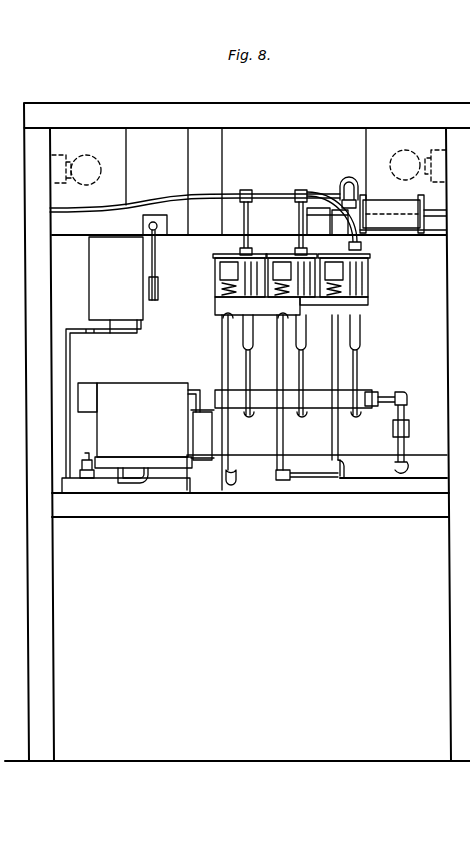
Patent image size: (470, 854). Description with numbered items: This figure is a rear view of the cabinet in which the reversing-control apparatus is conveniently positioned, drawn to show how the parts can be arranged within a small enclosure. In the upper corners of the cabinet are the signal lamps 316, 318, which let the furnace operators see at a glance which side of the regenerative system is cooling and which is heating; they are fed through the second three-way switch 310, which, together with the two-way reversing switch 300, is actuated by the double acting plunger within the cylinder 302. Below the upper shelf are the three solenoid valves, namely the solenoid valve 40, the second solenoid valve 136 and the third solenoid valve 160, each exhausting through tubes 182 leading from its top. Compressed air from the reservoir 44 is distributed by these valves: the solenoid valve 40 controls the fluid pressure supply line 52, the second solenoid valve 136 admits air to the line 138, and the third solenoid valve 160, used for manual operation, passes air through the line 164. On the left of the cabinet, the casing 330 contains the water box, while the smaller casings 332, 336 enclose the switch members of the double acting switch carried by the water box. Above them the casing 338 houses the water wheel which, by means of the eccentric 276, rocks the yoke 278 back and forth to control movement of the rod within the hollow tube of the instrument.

The signal lamp 318 is at (410, 140).
The signal lamp 316 is at (120, 148).
The second three-way switch 310 is at (304, 194).
The two-way reversing switch 300 is at (340, 214).
The exhaust tubes 182 is at (244, 232).
The cylinder 302 is at (392, 236).
The third solenoid valve 160 is at (372, 270).
The casing 338 is at (126, 365).
The yoke 278 is at (171, 235).
The eccentric 276 is at (160, 290).
The solenoid valve 40 is at (214, 305).
The second solenoid valve 136 is at (362, 306).
The air line 138 is at (288, 445).
The compressed air reservoir 44 is at (268, 402).
The air line 164 is at (332, 432).
The casing 330 is at (143, 433).
The casing 332 is at (86, 392).
The casing 336 is at (202, 385).
The fluid pressure supply line 52 is at (232, 458).